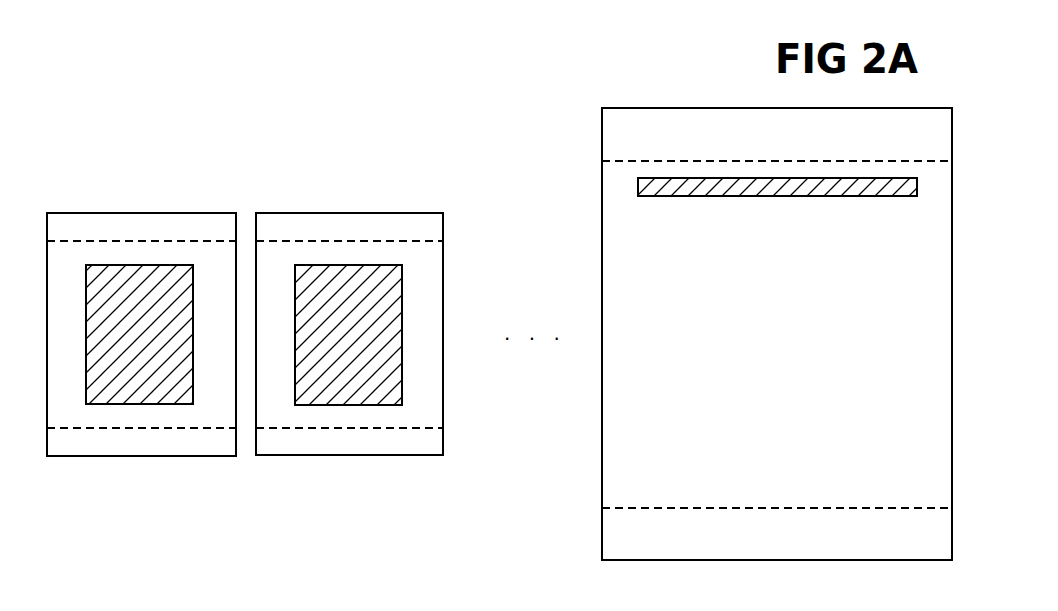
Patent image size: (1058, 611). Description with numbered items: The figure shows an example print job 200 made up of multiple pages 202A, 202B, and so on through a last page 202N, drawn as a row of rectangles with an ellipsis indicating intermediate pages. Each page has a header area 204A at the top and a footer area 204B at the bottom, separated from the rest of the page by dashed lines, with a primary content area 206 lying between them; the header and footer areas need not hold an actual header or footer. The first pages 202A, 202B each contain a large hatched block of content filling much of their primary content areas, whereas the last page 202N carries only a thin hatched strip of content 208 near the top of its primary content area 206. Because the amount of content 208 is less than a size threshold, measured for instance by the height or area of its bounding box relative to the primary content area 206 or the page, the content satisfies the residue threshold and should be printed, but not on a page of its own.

The print job 200 is at (209, 98).
The page 202A is at (109, 213).
The page 202B is at (353, 213).
The last page 202N is at (646, 108).
The header area 204A is at (612, 139).
The footer area 204B is at (612, 538).
The primary content area 206 is at (612, 486).
The content 208 is at (841, 197).